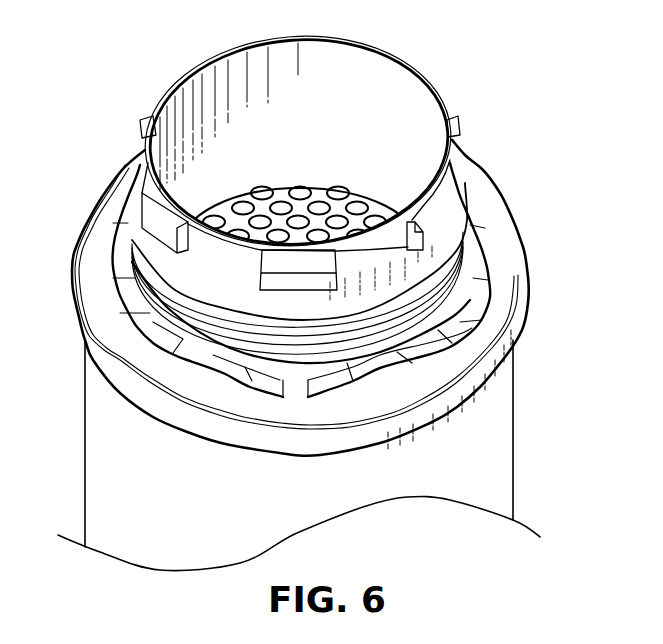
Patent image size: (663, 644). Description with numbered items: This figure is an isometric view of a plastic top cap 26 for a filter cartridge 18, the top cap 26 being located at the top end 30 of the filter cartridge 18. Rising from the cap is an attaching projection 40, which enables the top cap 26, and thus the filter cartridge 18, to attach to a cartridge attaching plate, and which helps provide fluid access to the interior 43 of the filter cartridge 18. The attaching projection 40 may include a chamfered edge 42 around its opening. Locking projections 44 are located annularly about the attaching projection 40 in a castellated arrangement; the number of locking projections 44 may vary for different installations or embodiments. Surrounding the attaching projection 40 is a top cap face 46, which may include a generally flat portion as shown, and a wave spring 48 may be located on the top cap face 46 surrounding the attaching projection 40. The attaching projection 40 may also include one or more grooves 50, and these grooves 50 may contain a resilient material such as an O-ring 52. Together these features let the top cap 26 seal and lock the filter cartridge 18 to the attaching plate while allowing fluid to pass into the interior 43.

The filter cartridge 18 is at (492, 486).
The top cap 26 is at (194, 46).
The top end 30 is at (484, 102).
The attaching projection 40 is at (443, 203).
The chamfered edge 42 is at (146, 150).
The interior 43 is at (360, 70).
The locking projections 44 is at (155, 106).
The top cap face 46 is at (503, 305).
The wave spring 48 is at (128, 313).
The grooves 50 is at (444, 291).
The O-ring 52 is at (432, 392).